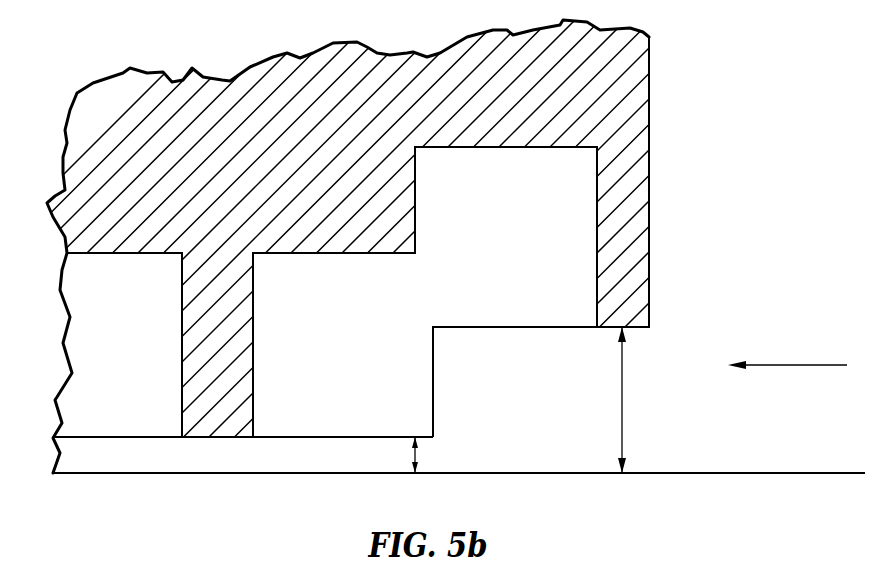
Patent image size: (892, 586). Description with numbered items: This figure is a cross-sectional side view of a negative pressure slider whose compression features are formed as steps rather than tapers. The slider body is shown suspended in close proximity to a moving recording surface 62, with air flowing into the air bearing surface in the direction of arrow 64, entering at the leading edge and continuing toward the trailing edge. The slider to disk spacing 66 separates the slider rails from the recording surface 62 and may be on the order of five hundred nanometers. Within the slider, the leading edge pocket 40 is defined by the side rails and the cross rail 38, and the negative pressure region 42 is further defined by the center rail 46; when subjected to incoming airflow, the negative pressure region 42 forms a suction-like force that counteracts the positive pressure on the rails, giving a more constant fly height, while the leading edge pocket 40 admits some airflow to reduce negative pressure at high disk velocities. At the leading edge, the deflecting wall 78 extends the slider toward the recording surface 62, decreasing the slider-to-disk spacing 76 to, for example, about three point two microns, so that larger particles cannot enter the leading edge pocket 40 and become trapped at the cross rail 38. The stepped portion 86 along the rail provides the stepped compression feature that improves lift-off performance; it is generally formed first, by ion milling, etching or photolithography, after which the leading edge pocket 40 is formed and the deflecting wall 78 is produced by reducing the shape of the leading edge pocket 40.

The cross rail 38 is at (205, 437).
The leading edge pocket 40 is at (335, 350).
The negative pressure region 42 is at (105, 348).
The center rail 46 is at (110, 437).
The recording surface 62 is at (840, 472).
The arrow 64 is at (803, 364).
The slider to disk spacing 66 is at (420, 455).
The slider-to-disk spacing 76 is at (617, 395).
The deflecting wall 78 is at (640, 190).
The stepped portion 86 is at (527, 329).